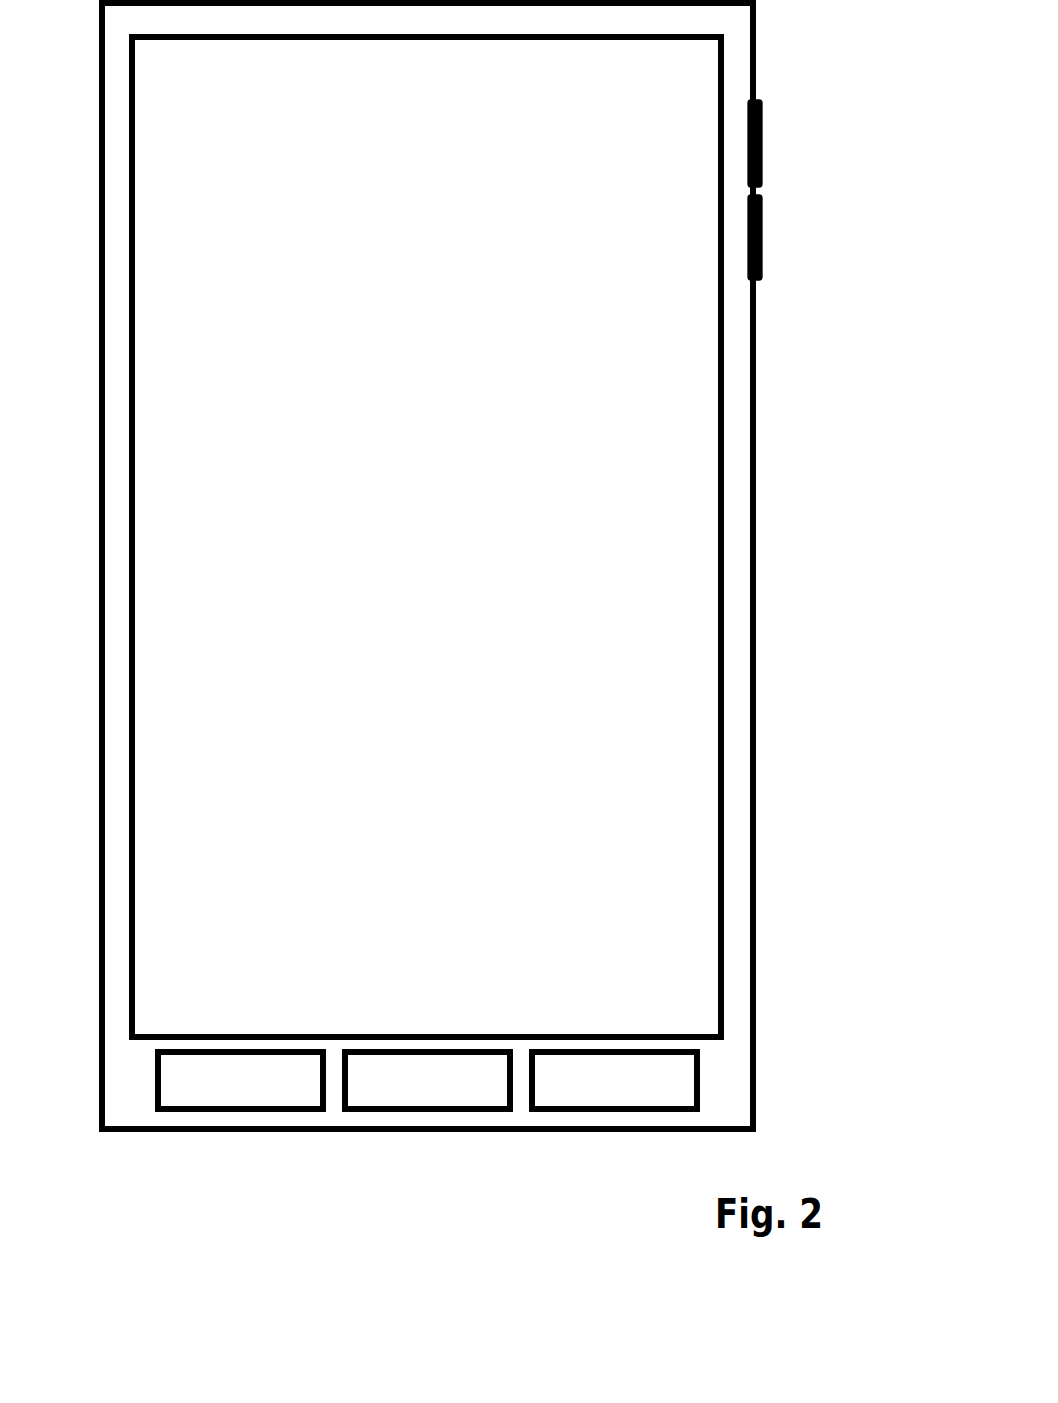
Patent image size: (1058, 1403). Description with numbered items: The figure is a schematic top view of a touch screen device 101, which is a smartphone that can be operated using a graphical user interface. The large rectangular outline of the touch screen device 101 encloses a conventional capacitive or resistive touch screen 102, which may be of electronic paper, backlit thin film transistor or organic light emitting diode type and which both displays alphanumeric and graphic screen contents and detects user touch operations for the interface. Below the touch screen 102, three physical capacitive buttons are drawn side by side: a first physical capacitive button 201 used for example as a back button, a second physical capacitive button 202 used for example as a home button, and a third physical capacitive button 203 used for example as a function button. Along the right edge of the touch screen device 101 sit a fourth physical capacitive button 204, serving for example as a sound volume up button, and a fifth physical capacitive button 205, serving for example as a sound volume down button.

The touch screen device 101 is at (758, 42).
The touch screen 102 is at (690, 462).
The first physical capacitive button 201 is at (183, 1100).
The second physical capacitive button 202 is at (405, 1100).
The third physical capacitive button 203 is at (626, 1100).
The fourth physical capacitive button 204 is at (764, 130).
The fifth physical capacitive button 205 is at (764, 218).